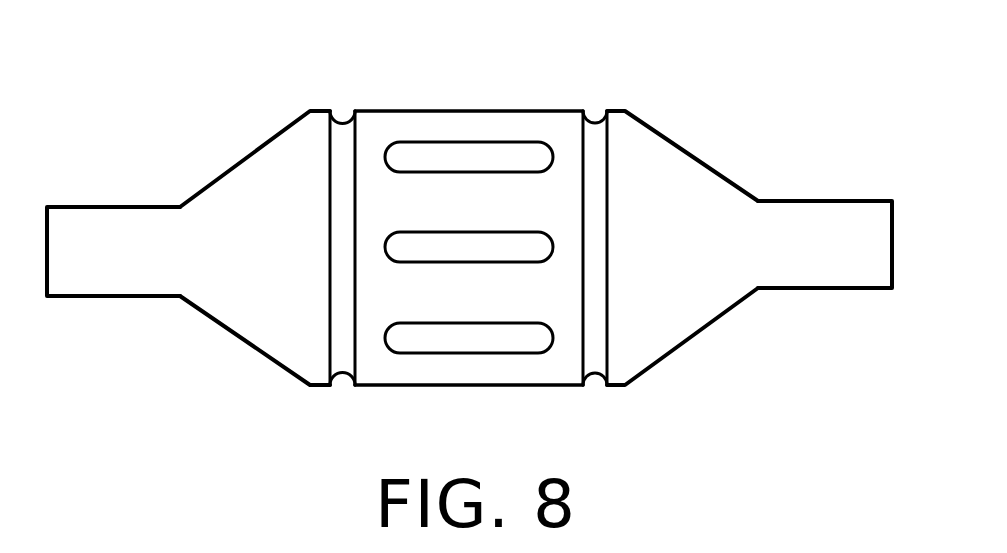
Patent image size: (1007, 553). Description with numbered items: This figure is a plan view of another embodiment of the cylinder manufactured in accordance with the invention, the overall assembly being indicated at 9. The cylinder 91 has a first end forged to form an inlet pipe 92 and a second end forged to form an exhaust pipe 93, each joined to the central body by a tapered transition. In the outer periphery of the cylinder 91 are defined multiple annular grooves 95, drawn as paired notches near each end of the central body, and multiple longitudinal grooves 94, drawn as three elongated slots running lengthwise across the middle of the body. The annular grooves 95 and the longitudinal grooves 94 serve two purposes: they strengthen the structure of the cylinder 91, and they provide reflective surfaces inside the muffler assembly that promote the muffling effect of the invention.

The exhaust tube 9 is at (238, 128).
The cylinder 91 is at (712, 168).
The inlet pipe 92 is at (105, 245).
The exhaust pipe 93 is at (857, 260).
The longitudinal grooves 94 is at (423, 157).
The annular grooves 95 is at (593, 118).